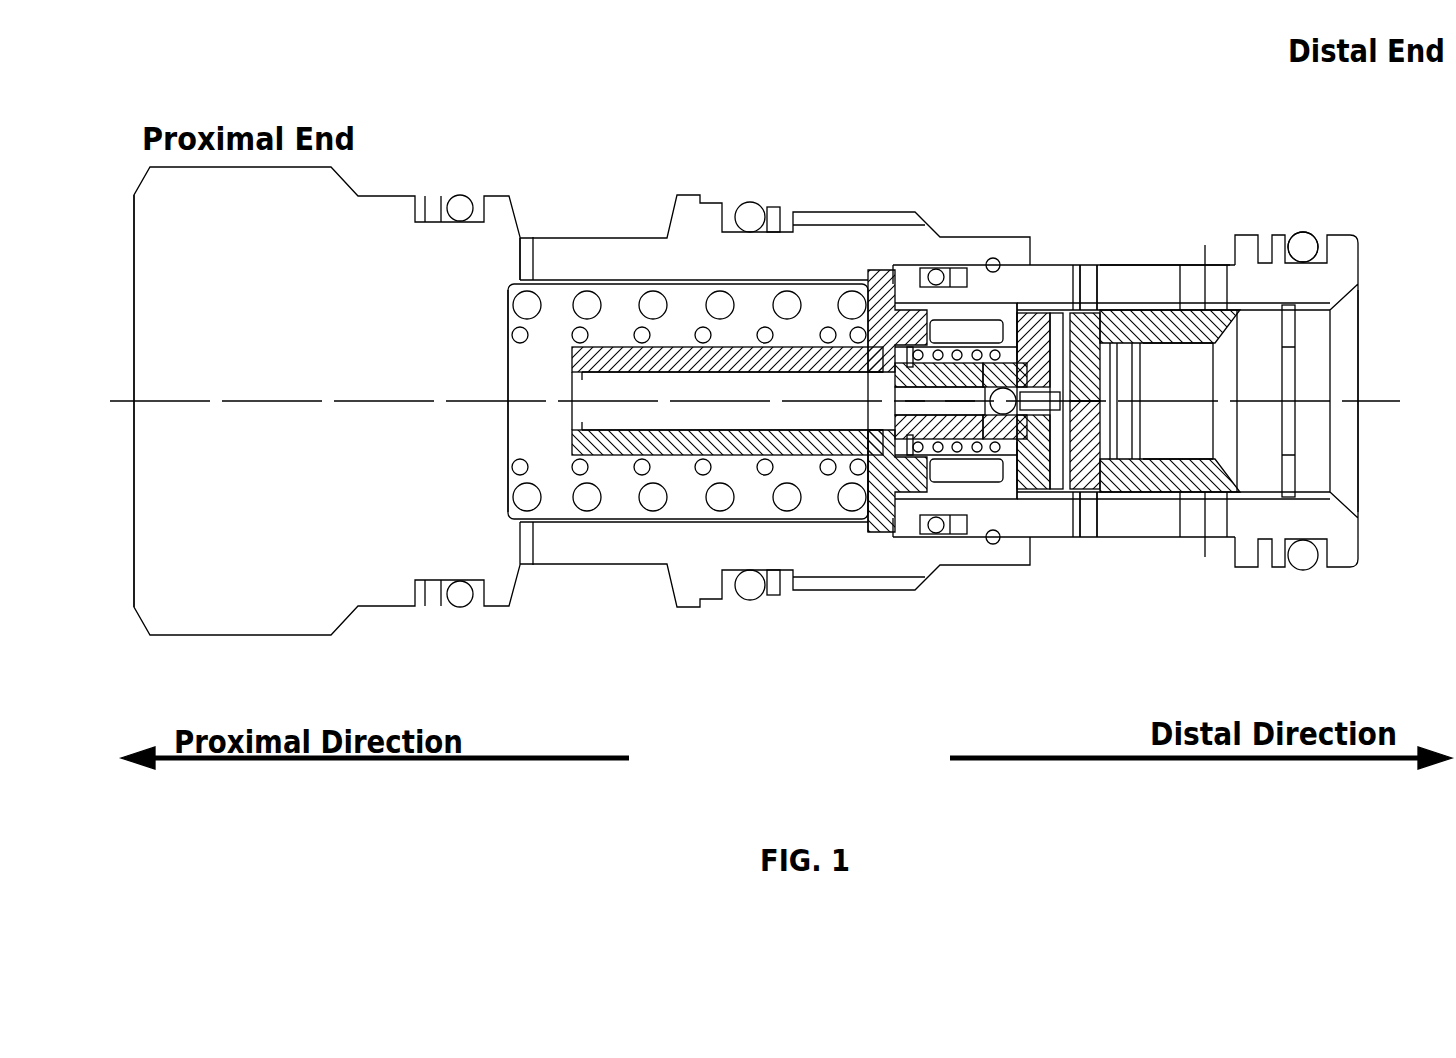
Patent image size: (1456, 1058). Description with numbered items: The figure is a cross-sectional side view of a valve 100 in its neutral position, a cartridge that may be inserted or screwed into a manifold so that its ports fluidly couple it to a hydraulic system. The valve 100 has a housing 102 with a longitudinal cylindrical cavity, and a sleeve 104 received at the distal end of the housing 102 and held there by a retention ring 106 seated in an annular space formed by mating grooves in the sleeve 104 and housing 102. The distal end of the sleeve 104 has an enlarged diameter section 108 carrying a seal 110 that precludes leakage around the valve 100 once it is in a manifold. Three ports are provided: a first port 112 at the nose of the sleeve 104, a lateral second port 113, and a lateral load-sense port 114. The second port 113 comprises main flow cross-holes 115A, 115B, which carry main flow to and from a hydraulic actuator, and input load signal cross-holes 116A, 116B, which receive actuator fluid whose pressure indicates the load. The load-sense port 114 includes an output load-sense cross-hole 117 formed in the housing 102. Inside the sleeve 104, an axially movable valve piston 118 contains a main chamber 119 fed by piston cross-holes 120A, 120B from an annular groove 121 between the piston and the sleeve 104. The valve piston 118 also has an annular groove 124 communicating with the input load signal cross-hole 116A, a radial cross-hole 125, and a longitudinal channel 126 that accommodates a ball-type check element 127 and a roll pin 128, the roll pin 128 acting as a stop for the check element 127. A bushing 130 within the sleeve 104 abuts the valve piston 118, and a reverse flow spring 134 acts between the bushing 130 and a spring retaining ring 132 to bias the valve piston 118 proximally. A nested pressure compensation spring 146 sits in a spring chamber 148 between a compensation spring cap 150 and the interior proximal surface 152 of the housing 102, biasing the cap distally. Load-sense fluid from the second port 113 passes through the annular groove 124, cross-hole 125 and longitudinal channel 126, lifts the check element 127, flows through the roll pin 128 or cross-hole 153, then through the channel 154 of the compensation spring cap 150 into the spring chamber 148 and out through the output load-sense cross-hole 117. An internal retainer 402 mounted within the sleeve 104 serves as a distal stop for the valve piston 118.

The valve 100 is at (492, 104).
The housing 102 is at (693, 193).
The sleeve 104 is at (1138, 536).
The retention ring 106 is at (998, 258).
The enlarged diameter section 108 is at (1340, 238).
The seal 110 is at (1302, 238).
The first port 112 is at (1365, 351).
The second port 113 is at (1148, 231).
The load-sense port 114 is at (612, 208).
The main flow cross-hole 115A is at (1216, 281).
The main flow cross-hole 115B is at (1215, 520).
The input load signal cross-hole 116A is at (1087, 281).
The input load signal cross-hole 116B is at (1093, 522).
The output load-sense cross-hole 117 is at (530, 236).
The valve piston 118 is at (1113, 309).
The main chamber 119 is at (1186, 416).
The piston cross-hole 120A is at (1175, 365).
The piston cross-hole 120B is at (1168, 470).
The annular groove 121 is at (1132, 308).
The annular groove 124 is at (1060, 306).
The cross-hole 125 is at (1057, 348).
The longitudinal channel 126 is at (1043, 410).
The check element 127 is at (996, 410).
The roll pin 128 is at (933, 417).
The bushing 130 is at (950, 334).
The spring retaining ring 132 is at (895, 505).
The reverse flow spring 134 is at (960, 448).
The pressure compensation spring 146 is at (590, 497).
The spring chamber 148 is at (750, 487).
The compensation spring cap 150 is at (808, 343).
The interior proximal surface 152 is at (515, 388).
The cross-hole 153 is at (1010, 434).
The channel 154 is at (668, 407).
The internal retainer 402 is at (1297, 333).